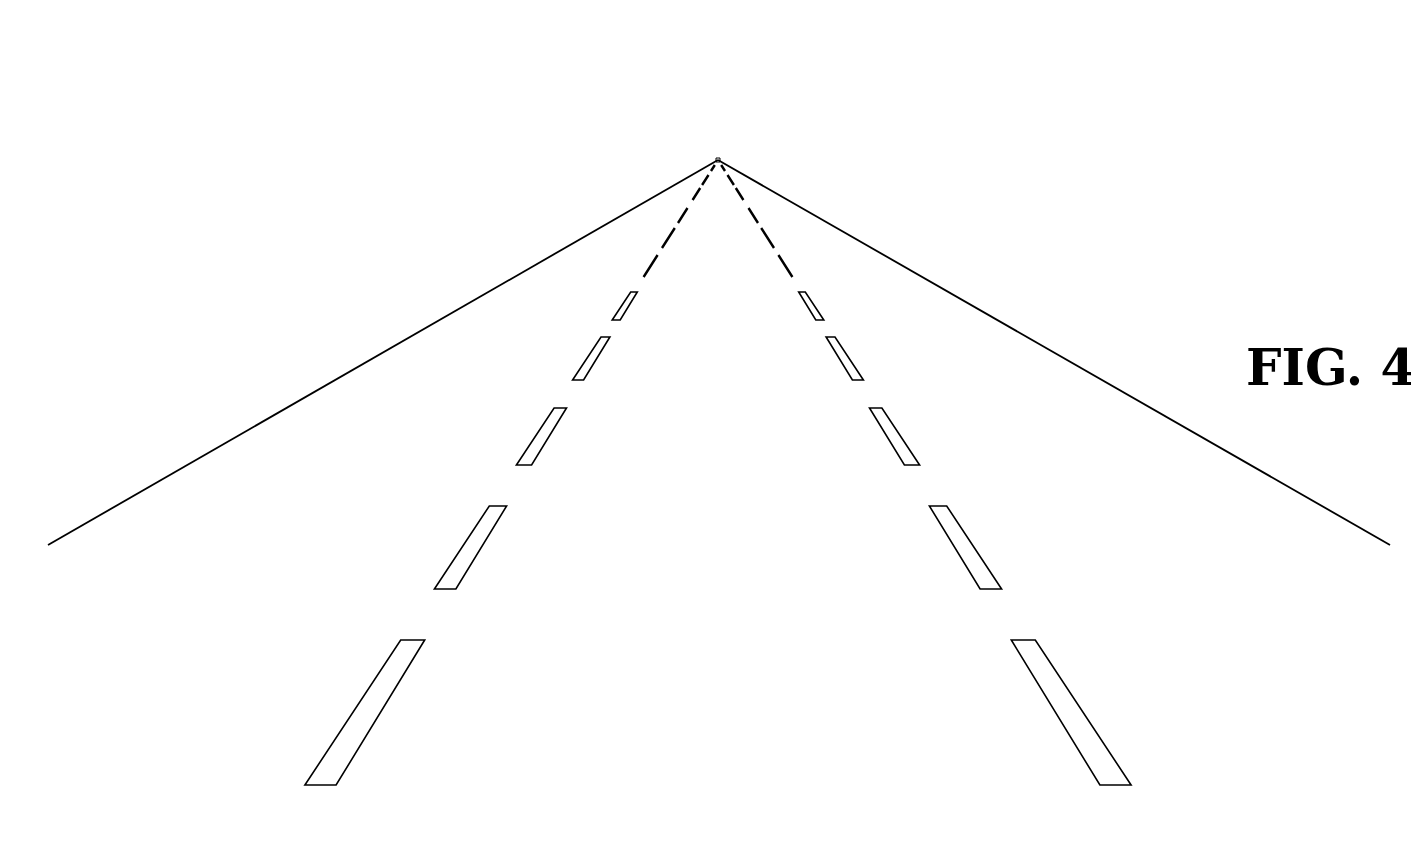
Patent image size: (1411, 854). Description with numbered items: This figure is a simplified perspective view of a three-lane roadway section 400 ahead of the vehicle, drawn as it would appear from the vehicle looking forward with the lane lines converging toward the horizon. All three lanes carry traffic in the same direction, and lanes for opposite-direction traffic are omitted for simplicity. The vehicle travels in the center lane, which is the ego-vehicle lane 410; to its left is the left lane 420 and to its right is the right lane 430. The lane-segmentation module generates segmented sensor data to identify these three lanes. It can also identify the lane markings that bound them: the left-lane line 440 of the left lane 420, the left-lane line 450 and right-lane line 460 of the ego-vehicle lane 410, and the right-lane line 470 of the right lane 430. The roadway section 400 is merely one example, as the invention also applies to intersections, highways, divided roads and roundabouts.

The three-lane roadway section 400 is at (1103, 136).
The ego-vehicle lane 410 is at (723, 165).
The left lane 420 is at (576, 272).
The right lane 430 is at (858, 272).
The left-lane line of left lane 440 is at (386, 350).
The left-lane line of ego-vehicle lane 450 is at (538, 438).
The right-lane line of ego-vehicle lane 460 is at (898, 438).
The right-lane line of right lane 470 is at (1048, 350).